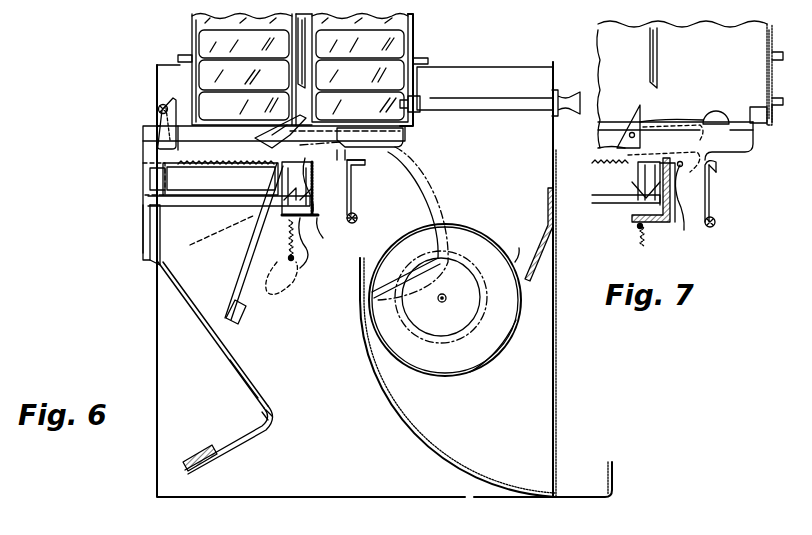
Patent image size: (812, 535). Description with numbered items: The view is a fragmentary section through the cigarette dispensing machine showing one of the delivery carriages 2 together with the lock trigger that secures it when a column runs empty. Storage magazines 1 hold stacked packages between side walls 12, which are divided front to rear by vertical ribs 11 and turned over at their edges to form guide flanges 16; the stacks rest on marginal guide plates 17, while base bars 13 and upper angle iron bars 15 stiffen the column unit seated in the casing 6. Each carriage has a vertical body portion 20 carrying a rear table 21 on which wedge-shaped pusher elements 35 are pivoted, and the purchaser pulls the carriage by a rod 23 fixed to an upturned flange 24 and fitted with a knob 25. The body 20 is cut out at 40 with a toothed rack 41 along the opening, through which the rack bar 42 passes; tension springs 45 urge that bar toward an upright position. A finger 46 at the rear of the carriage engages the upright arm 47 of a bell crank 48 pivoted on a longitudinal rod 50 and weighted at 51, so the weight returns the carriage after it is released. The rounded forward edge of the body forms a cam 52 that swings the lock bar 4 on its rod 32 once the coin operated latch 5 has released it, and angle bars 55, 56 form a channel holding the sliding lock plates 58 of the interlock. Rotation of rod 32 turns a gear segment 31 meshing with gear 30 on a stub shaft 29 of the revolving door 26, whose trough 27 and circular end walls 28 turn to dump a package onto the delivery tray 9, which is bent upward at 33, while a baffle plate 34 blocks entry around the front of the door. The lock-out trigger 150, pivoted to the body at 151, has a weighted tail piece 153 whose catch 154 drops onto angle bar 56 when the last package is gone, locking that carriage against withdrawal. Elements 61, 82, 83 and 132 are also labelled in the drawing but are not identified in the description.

In FIG. 6, the storage magazines 1 is at (185, 25).
In FIG. 6, the delivery carriages 2 is at (140, 151).
In FIG. 6, the lock bar 4 is at (354, 205).
In FIG. 7, the lock bar 4 is at (716, 183).
In FIG. 6, the coin operated latch 5 is at (420, 447).
In FIG. 7, the casing 6 is at (585, 166).
In FIG. 6, the delivery tray 9 is at (613, 487).
In FIG. 6, the vertical ribs 11 is at (405, 48).
In FIG. 7, the vertical ribs 11 is at (660, 62).
In FIG. 7, the side walls 12 is at (612, 45).
In FIG. 6, the longitudinal base bars 13 is at (186, 58).
In FIG. 7, the longitudinal base bars 13 is at (757, 59).
In FIG. 6, the longitudinal angle iron bars 15 is at (420, 58).
In FIG. 6, the guide flanges 16 is at (416, 26).
In FIG. 7, the guide flanges 16 is at (768, 46).
In FIG. 6, the marginal guide plates 17 is at (232, 117).
In FIG. 6, the vertical body portion 20 is at (415, 158).
In FIG. 7, the rear table 21 is at (765, 90).
In FIG. 6, the rods 23 is at (510, 88).
In FIG. 7, the rods 23 is at (762, 147).
In FIG. 6, the upturned flanges 24 is at (424, 100).
In FIG. 6, the knobs 25 is at (568, 76).
In FIG. 6, the revolving door 26 is at (478, 224).
In FIG. 6, the trough 27 is at (510, 262).
In FIG. 6, the circular end walls 28 is at (505, 316).
In FIG. 6, the stub shafts 29 is at (452, 288).
In FIG. 6, the gear 30 is at (480, 272).
In FIG. 6, the gear segment 31 is at (438, 205).
In FIG. 6, the rod 32 is at (358, 220).
In FIG. 7, the rod 32 is at (720, 224).
In FIG. 6, the upward bend of delivery tray 33 is at (165, 103).
In FIG. 6, the baffle plate 34 is at (546, 218).
In FIG. 6, the wedge-shaped pusher elements 35 is at (264, 142).
In FIG. 7, the wedge-shaped pusher elements 35 is at (640, 115).
In FIG. 6, the cut-out opening 40 is at (167, 235).
In FIG. 6, the rack 41 is at (200, 172).
In FIG. 6, the rack bar 42 is at (290, 170).
In FIG. 7, the rack bar 42 is at (630, 186).
In FIG. 6, the tension springs 45 is at (296, 286).
In FIG. 7, the tension springs 45 is at (632, 250).
In FIG. 6, the finger 46 is at (145, 240).
In FIG. 6, the upright arm 47 is at (208, 295).
In FIG. 6, the bell crank 48 is at (250, 376).
In FIG. 6, the longitudinal rod 50 is at (262, 416).
In FIG. 6, the weight 51 is at (203, 455).
In FIG. 6, the cam 52 is at (355, 228).
In FIG. 6, the angle bar 55 is at (291, 260).
In FIG. 7, the angle bar 55 is at (668, 224).
In FIG. 6, the angle bar 56 is at (286, 236).
In FIG. 7, the angle bar 56 is at (636, 220).
In FIG. 6, the lock plates 58 is at (318, 248).
In FIG. 7, the lock plates 58 is at (686, 228).
In FIG. 6, the slide bar 61 is at (205, 205).
In FIG. 6, the push rod 82 is at (245, 318).
In FIG. 6, the rod guide 83 is at (222, 230).
In FIG. 6, the stop block 132 is at (165, 172).
In FIG. 7, the stop block 132 is at (752, 112).
In FIG. 6, the lock-out trigger 150 is at (404, 136).
In FIG. 7, the lock-out trigger 150 is at (704, 116).
In FIG. 6, the trigger pivot 151 is at (158, 110).
In FIG. 7, the trigger pivot 151 is at (714, 190).
In FIG. 7, the tail piece 153 is at (662, 125).
In FIG. 7, the catch 154 is at (655, 135).